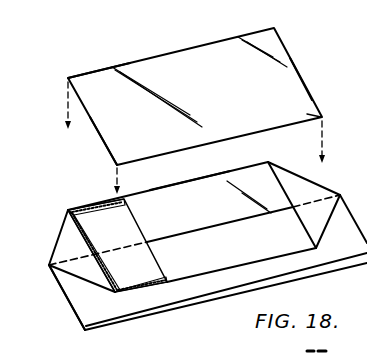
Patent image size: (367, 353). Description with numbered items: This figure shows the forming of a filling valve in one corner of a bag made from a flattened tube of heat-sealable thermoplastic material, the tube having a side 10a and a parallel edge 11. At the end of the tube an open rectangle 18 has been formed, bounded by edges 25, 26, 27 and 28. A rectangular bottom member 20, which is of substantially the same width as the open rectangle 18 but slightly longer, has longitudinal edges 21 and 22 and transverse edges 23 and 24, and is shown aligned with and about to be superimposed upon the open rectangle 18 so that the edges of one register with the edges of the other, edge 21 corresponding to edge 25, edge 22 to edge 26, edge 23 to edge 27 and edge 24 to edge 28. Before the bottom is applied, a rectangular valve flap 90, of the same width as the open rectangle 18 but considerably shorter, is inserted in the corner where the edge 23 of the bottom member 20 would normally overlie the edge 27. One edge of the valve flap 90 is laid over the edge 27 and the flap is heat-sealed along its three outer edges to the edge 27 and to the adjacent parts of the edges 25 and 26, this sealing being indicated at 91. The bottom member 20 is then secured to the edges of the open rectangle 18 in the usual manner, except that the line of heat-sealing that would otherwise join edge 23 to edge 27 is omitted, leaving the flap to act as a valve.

The rectangular bottom member 20 is at (226, 95).
The longitudinal edge 21 is at (95, 71).
The longitudinal edge 22 is at (304, 119).
The transverse edge 23 is at (105, 148).
The transverse edge 24 is at (308, 93).
The open rectangle 18 is at (249, 238).
The edge of open rectangle 25 is at (216, 175).
The edge of open rectangle 26 is at (298, 258).
The edge of open rectangle 27 is at (55, 282).
The edge of open rectangle 28 is at (278, 173).
The rectangular valve flap 90 is at (124, 241).
The heat-seal 91 is at (75, 205).
The side of the tube 10a is at (185, 292).
The edge of the tube 11 is at (76, 320).